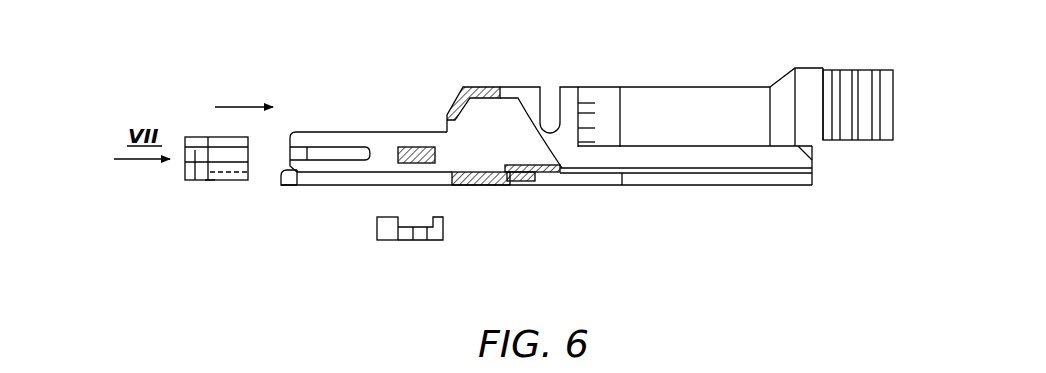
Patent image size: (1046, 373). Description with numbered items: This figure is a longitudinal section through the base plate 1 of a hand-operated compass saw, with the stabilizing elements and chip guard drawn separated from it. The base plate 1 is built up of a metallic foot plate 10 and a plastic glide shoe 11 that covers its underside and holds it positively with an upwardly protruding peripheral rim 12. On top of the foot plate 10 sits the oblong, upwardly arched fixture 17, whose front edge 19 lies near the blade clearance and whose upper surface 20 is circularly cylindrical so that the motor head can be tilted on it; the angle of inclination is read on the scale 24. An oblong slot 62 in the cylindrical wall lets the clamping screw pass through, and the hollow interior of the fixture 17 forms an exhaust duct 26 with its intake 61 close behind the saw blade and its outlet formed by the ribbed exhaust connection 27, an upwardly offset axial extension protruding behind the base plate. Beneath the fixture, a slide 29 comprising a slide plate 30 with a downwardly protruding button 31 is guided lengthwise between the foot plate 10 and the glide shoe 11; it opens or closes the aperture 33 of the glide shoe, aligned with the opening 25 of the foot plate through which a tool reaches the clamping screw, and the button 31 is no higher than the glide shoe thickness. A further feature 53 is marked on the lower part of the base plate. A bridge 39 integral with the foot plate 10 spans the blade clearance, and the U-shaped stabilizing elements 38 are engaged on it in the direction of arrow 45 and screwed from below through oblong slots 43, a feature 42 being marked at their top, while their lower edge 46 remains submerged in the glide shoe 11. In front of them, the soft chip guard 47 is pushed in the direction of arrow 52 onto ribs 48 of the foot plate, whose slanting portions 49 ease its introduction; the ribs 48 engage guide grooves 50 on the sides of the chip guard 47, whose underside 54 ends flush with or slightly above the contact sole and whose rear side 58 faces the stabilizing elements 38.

The base plate 1 is at (668, 190).
The foot plate 10 is at (697, 157).
The glide shoe 11 is at (743, 185).
The peripheral rim 12 is at (279, 174).
The fixture 17 is at (700, 130).
The front edge of fixture 19 is at (452, 107).
The upper surface of fixture 20 is at (670, 84).
The scale 24 is at (614, 105).
The opening in base plate 25 is at (614, 244).
The exhaust duct 26 is at (488, 125).
The exhaust connection 27 is at (862, 100).
The slide 29 is at (533, 226).
The slide plate 30 is at (545, 175).
The button 31 is at (525, 185).
The aperture of glide shoe 33 is at (562, 170).
The stabilizing elements 38 is at (433, 237).
The bridge 39 is at (395, 151).
The notch 42 is at (412, 226).
The oblong slots 43 is at (420, 237).
The arrow 45 is at (413, 255).
The lower edge of stabilizing elements 46 is at (379, 242).
The chip guard 47 is at (198, 137).
The ribs 48 is at (342, 159).
The slanting portions 49 is at (293, 178).
The guide grooves 50 is at (195, 178).
The arrow 52 is at (244, 105).
The pin 53 is at (623, 185).
The underside of chip guard 54 is at (211, 183).
The rear side of guard 58 is at (256, 140).
The intake of exhaust duct 61 is at (470, 118).
The oblong slot 62 is at (551, 108).